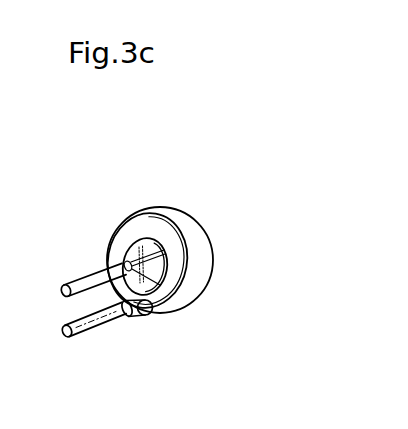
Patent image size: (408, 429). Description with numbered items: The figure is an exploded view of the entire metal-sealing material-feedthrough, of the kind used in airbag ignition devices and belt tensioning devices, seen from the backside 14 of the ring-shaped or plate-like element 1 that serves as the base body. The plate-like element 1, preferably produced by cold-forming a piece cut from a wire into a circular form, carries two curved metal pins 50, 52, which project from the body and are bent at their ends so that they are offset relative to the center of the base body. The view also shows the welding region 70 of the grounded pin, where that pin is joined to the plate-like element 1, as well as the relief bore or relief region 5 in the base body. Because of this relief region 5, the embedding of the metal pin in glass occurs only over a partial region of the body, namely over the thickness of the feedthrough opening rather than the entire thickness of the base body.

The ring-shaped or plate-like element 1 is at (226, 213).
The relief region 5 is at (118, 240).
The backside 14 is at (152, 238).
The metal pin 50 is at (78, 279).
The metal pin 52 is at (93, 329).
The welding region 70 is at (142, 317).